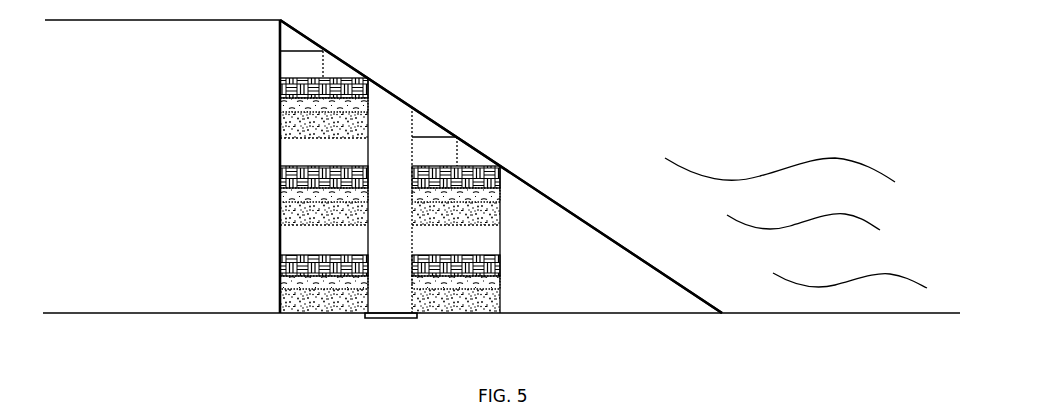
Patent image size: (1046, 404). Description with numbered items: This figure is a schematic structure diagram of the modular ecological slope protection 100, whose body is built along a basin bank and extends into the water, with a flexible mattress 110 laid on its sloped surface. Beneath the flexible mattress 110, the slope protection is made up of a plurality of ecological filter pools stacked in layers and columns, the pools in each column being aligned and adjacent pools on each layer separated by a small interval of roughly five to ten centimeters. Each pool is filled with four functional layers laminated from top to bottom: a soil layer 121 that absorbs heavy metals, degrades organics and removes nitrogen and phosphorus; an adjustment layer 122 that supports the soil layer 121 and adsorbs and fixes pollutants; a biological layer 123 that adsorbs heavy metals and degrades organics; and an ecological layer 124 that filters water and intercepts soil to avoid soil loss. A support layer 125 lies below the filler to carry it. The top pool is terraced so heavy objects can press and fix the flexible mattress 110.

The ecological slope protection 100 is at (405, 102).
The flexible mattress 110 is at (318, 45).
The soil layer 121 is at (280, 41).
The adjustment layer 122 is at (280, 64).
The biological layer 123 is at (280, 89).
The ecological layer 124 is at (280, 111).
The support layer 125 is at (280, 131).